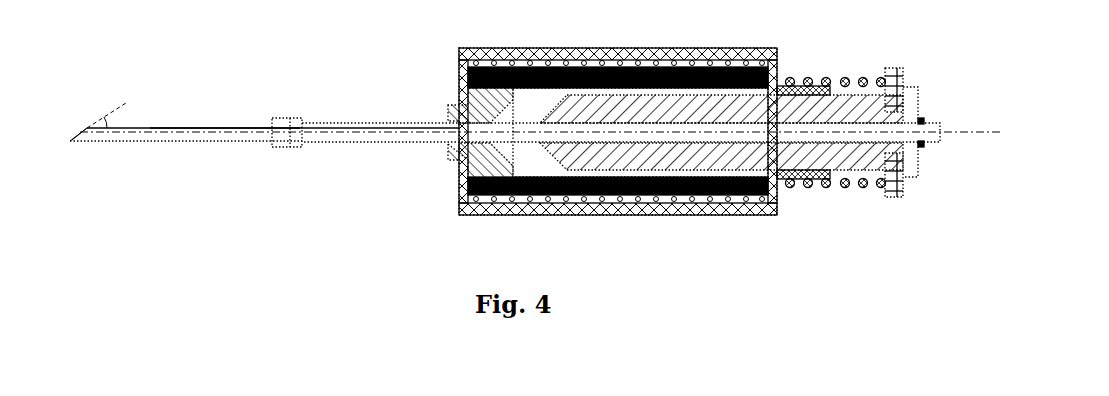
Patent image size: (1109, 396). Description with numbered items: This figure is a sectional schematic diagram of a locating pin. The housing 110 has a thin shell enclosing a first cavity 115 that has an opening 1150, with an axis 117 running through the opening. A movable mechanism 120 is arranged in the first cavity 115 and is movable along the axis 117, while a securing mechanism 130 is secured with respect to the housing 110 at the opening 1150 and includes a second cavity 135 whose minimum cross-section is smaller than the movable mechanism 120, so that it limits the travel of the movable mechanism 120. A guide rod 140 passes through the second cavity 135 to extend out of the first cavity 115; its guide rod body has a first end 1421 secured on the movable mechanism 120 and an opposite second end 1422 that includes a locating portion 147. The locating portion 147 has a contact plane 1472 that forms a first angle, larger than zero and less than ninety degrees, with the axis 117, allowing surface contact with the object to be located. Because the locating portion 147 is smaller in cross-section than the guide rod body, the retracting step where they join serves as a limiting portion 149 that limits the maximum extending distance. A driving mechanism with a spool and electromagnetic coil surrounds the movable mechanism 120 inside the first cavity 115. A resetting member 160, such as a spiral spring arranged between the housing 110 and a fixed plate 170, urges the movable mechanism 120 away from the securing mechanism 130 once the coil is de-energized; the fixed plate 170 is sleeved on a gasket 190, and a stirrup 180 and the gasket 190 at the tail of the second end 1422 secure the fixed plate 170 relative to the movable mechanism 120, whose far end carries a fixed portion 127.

The housing 110 is at (593, 52).
The first cavity 115 is at (522, 95).
The axis 117 is at (318, 133).
The movable mechanism 120 is at (870, 94).
The fixed portion 127 is at (897, 197).
The securing mechanism 130 is at (452, 105).
The second cavity 135 is at (528, 215).
The guide rod 140 is at (338, 128).
The locating portion 147 is at (163, 140).
The limiting portion 149 is at (287, 118).
The resetting member 160 is at (791, 80).
The fixed plate 170 is at (900, 82).
The stirrup 180 is at (922, 120).
The gasket 190 is at (912, 100).
The opening 1150 is at (464, 205).
The first end 1421 is at (183, 128).
The second end 1422 is at (752, 160).
The contact plane 1472 is at (87, 128).